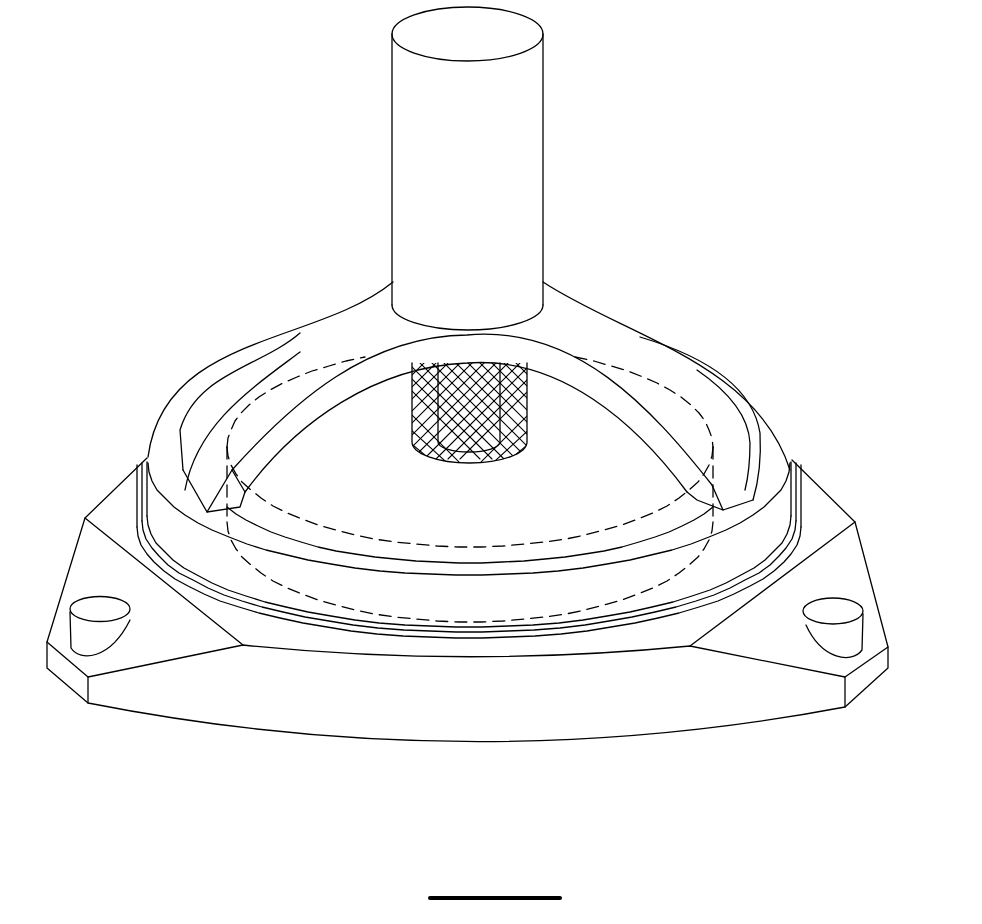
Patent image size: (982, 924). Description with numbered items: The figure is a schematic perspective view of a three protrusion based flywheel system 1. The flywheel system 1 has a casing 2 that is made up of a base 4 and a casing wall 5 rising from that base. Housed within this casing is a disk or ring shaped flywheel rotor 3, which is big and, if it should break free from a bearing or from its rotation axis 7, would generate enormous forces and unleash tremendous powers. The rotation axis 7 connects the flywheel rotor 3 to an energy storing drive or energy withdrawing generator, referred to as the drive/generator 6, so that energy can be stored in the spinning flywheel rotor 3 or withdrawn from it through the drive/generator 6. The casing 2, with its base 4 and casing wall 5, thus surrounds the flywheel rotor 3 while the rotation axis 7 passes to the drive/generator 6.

The flywheel system 1 is at (770, 125).
The casing 2 is at (105, 428).
The flywheel rotor 3 is at (343, 485).
The base 4 is at (280, 712).
The casing wall 5 is at (182, 395).
The drive/generator 6 is at (523, 92).
The rotation axis 7 is at (483, 405).